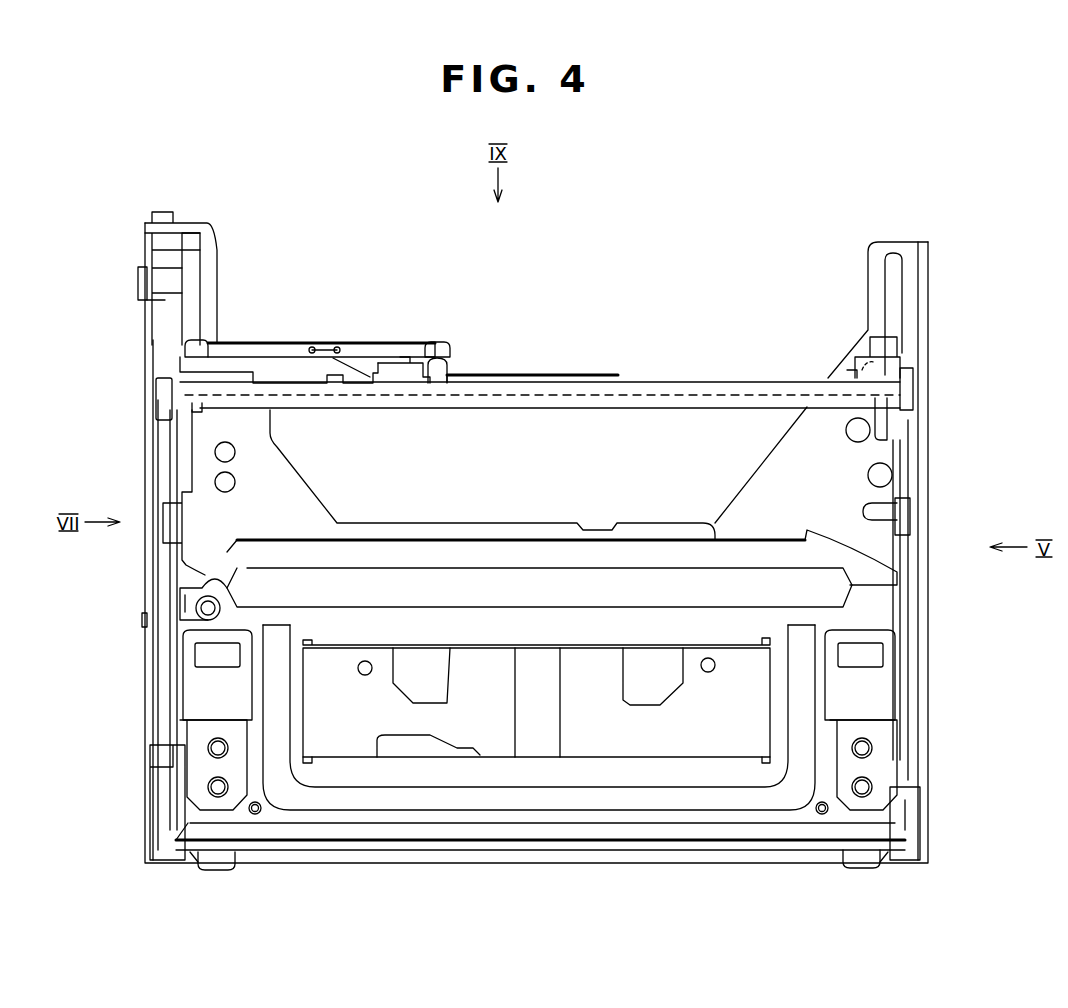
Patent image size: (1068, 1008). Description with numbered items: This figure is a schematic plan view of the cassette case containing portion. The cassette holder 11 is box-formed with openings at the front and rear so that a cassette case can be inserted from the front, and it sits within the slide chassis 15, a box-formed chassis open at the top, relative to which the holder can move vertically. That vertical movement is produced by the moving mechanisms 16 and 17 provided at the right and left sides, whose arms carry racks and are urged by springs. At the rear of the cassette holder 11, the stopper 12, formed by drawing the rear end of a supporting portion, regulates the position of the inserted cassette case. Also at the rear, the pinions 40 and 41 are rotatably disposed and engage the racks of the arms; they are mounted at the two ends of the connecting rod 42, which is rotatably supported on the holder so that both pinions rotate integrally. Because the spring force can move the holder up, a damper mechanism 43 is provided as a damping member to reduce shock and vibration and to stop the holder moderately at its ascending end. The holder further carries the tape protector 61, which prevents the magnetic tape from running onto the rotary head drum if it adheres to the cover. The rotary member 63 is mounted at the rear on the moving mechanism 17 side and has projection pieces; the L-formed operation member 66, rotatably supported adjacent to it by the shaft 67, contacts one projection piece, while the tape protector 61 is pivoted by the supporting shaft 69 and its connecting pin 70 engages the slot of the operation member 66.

The cassette holder 11 is at (580, 838).
The stopper 12 is at (853, 367).
The slide chassis 15 is at (910, 300).
The moving mechanism 16 is at (945, 578).
The moving mechanism 17 is at (131, 590).
The pinion 40 is at (918, 380).
The pinion 41 is at (158, 385).
The connecting rod 42 is at (658, 392).
The damper mechanism 43 is at (206, 206).
The tape protector 61 is at (548, 373).
The rotary member 63 is at (203, 340).
The operation member 66 is at (355, 342).
The shaft 67 is at (245, 357).
The supporting shaft 69 is at (400, 357).
The connecting pin 70 is at (432, 342).